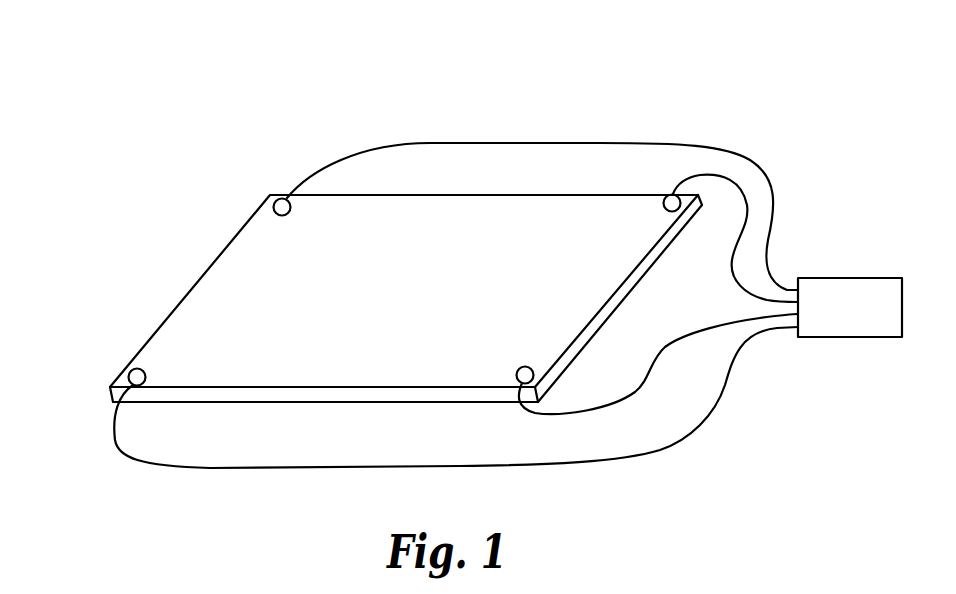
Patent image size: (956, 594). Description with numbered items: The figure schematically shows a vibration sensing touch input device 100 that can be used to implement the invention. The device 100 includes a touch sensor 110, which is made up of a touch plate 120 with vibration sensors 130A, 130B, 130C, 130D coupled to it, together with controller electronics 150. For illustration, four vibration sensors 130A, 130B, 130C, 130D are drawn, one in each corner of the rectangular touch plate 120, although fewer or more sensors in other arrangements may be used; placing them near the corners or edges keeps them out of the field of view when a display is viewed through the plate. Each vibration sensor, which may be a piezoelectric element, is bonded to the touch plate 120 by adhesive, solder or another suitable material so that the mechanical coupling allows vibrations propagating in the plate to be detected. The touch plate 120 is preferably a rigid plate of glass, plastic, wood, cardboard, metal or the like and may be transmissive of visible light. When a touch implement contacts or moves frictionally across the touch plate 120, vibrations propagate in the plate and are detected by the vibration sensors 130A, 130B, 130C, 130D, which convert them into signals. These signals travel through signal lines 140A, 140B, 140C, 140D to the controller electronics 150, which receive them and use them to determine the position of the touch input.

The vibration sensing touch input device 100 is at (792, 47).
The touch sensor 110 is at (246, 184).
The touch plate 120 is at (450, 269).
The vibration sensor 130A is at (277, 199).
The vibration sensor 130B is at (666, 196).
The vibration sensor 130C is at (520, 380).
The vibration sensor 130D is at (131, 382).
The signal line 140A is at (348, 158).
The signal line 140B is at (722, 176).
The signal line 140C is at (653, 375).
The signal line 140D is at (198, 470).
The controller electronics 150 is at (835, 287).